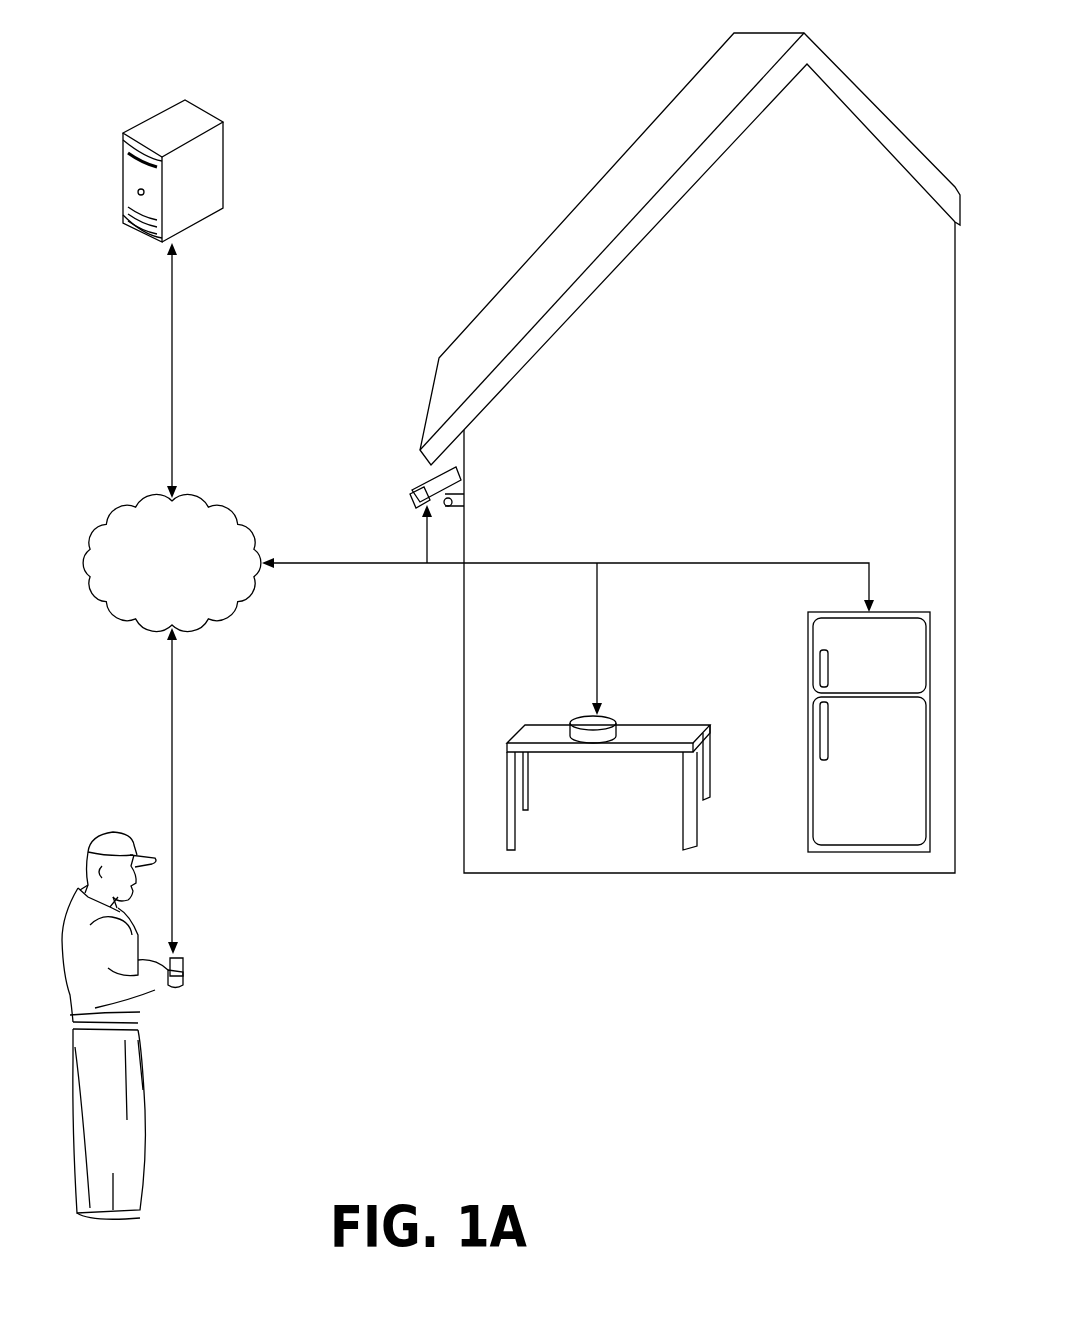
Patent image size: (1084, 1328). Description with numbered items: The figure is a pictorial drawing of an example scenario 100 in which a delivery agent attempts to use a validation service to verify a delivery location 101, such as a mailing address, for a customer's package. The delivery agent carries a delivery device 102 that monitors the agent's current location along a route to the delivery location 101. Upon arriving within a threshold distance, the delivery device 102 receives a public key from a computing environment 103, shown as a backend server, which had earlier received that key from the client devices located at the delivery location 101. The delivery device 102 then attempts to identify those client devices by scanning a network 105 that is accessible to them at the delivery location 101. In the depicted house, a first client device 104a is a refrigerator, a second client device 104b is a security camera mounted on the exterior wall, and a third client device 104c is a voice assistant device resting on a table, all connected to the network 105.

The example scenario 100 is at (96, 42).
The delivery location 101 is at (461, 330).
The delivery device 102 is at (183, 962).
The computing environment 103 is at (183, 99).
The first client device 104a is at (905, 611).
The second client device 104b is at (429, 470).
The third client device 104c is at (613, 718).
The network 105 is at (172, 563).